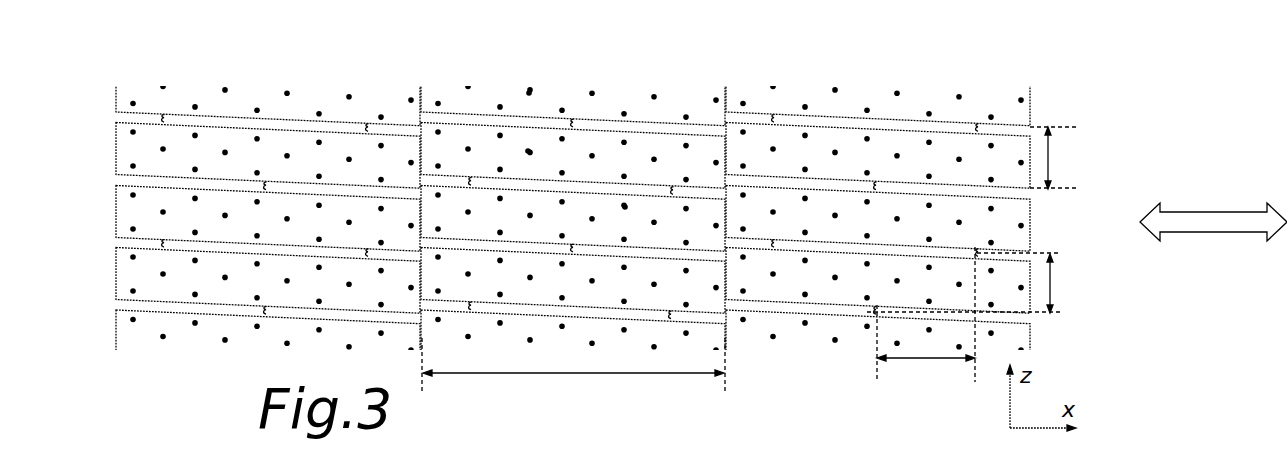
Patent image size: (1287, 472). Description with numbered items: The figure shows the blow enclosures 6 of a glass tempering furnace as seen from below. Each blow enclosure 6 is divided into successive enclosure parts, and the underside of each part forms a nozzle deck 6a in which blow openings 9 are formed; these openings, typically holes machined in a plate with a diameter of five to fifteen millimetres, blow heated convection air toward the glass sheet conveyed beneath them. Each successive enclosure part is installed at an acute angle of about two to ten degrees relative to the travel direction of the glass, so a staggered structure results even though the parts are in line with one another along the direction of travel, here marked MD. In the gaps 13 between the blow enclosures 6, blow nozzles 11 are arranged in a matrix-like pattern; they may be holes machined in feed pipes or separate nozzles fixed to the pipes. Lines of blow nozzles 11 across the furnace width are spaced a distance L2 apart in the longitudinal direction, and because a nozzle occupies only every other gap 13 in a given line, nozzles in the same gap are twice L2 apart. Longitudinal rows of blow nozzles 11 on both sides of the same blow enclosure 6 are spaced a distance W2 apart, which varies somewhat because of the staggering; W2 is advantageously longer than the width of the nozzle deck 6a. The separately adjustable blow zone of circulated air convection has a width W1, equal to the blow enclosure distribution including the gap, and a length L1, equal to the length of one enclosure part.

The blow enclosure 6 is at (1030, 227).
The nozzle deck 6a is at (919, 157).
The blow opening 9 is at (625, 206).
The blow nozzle 11 is at (165, 119).
The gap 13 is at (813, 121).
The width of the separately adjustable blow zone W1 is at (1052, 158).
The distance between blow nozzle rows W2 is at (1054, 287).
The length of the separately adjustable blow zone L1 is at (567, 374).
The distance between blow nozzle lines L2 is at (927, 359).
The machine direction MD is at (1220, 232).